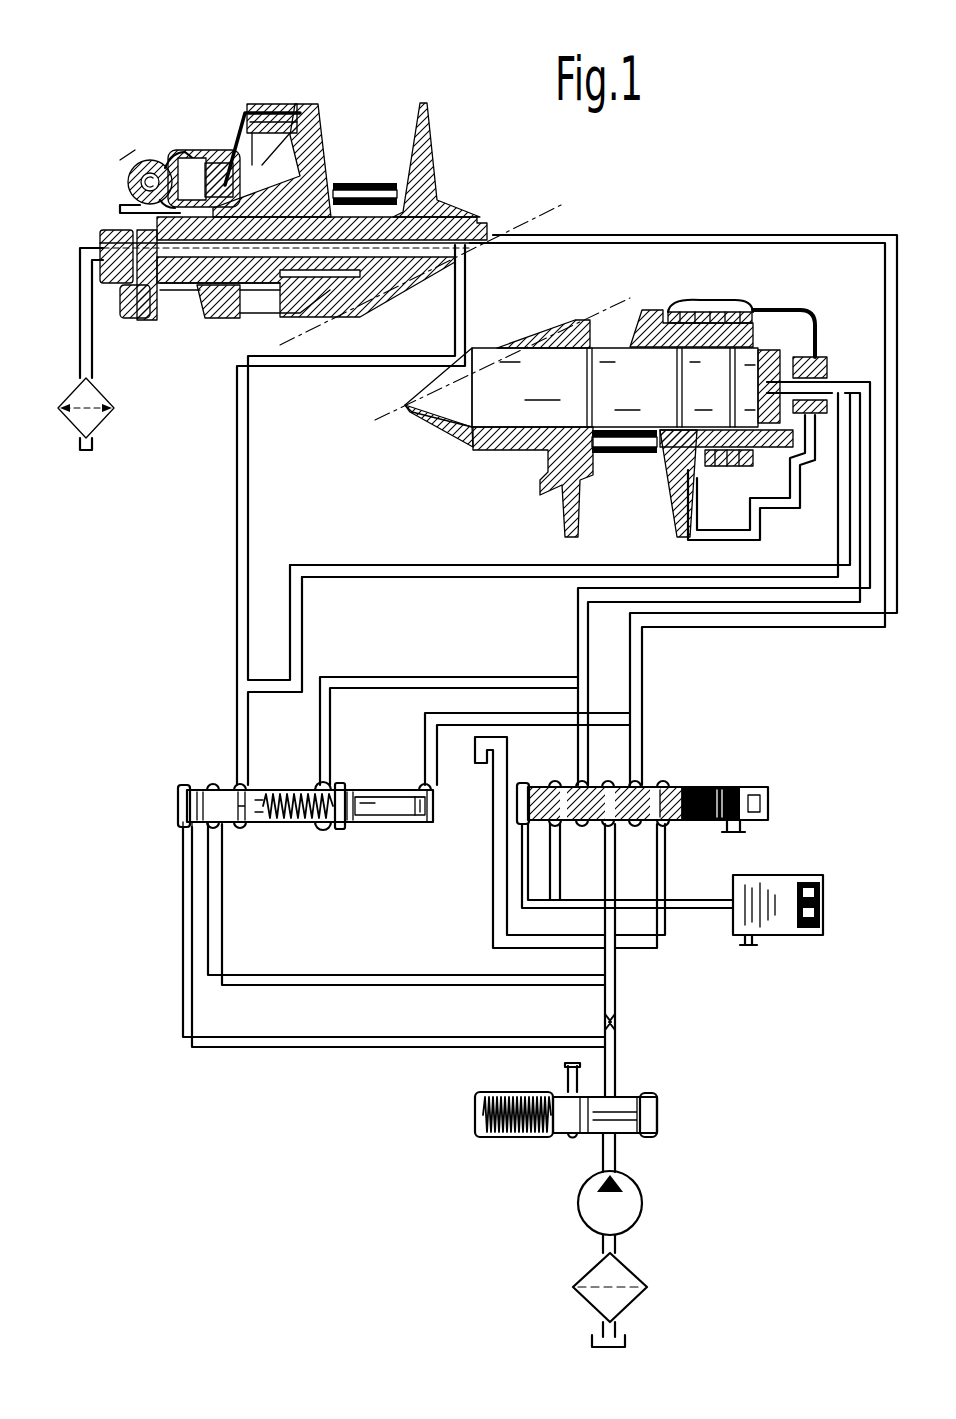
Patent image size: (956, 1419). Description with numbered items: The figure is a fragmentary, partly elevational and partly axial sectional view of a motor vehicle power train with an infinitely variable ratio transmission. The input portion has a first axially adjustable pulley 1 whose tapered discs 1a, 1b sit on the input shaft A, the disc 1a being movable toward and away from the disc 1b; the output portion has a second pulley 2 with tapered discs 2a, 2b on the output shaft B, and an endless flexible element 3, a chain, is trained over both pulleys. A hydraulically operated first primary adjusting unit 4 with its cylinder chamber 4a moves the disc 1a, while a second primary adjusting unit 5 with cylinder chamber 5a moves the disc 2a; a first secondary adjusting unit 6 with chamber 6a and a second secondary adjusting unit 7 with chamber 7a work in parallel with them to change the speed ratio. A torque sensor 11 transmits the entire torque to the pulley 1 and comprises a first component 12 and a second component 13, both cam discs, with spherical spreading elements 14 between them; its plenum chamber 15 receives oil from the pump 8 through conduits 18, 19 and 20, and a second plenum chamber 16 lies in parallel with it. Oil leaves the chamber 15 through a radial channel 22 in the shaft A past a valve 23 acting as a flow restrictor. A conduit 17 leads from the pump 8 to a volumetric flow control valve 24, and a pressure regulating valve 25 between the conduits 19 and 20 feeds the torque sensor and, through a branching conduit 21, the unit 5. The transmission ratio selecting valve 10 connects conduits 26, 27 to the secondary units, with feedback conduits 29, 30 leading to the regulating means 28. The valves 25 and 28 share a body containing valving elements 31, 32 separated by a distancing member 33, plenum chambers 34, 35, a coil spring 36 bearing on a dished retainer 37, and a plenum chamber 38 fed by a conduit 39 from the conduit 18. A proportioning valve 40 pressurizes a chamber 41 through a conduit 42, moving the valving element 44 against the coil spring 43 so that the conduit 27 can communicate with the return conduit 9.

The first axially adjustable pulley 1 is at (392, 113).
The tapered disc 1a is at (310, 133).
The tapered disc 1b is at (437, 94).
The second pulley 2 is at (498, 462).
The tapered disc 2a is at (682, 497).
The tapered disc 2b is at (560, 467).
The endless flexible element 3 is at (637, 455).
The first primary adjusting unit 4 is at (258, 130).
The cylinder chamber 4a is at (233, 167).
The second primary adjusting unit 5 is at (775, 480).
The cylinder chamber 5a is at (733, 503).
The first secondary adjusting unit 6 is at (263, 160).
The cylinder chamber 6a is at (253, 135).
The second secondary adjusting unit 7 is at (730, 312).
The cylinder chamber 7a is at (763, 307).
The pump 8 is at (642, 1207).
The return conduit 9 is at (503, 936).
The transmission ratio selecting valve 10 is at (690, 778).
The torque sensor 11 is at (126, 154).
The first component 12 is at (140, 203).
The second component 13 is at (167, 160).
The spherical spreading elements 14 is at (147, 182).
The plenum chamber 15 is at (187, 190).
The second plenum chamber 16 is at (222, 173).
The conduit 17 is at (616, 1158).
The conduit 18 is at (616, 1022).
The conduit 19 is at (305, 978).
The conduit 20 is at (456, 299).
The conduit 21 is at (361, 565).
The radial channel 22 is at (137, 250).
The valve 23 is at (133, 238).
The volumetric flow control valve 24 is at (518, 1135).
The pressure regulating valve 25 is at (176, 778).
The conduit 26 is at (672, 235).
The conduit 27 is at (848, 383).
The regulating means 28 is at (382, 786).
The feedback conduit 29 is at (423, 716).
The feedback conduit 30 is at (345, 677).
The valving element 31 is at (190, 796).
The valving element 32 is at (388, 830).
The distancing member 33 is at (275, 823).
The plenum chamber 34 is at (443, 788).
The plenum chamber 35 is at (340, 783).
The coil spring 36 is at (296, 823).
The dished retainer 37 is at (333, 830).
The plenum chamber 38 is at (178, 828).
The conduit 39 is at (183, 989).
The proportioning valve 40 is at (782, 922).
The chamber 41 is at (522, 783).
The conduit 42 is at (695, 908).
The coil spring 43 is at (721, 789).
The valving element 44 is at (665, 785).
The input shaft A is at (110, 233).
The output shaft B is at (492, 378).